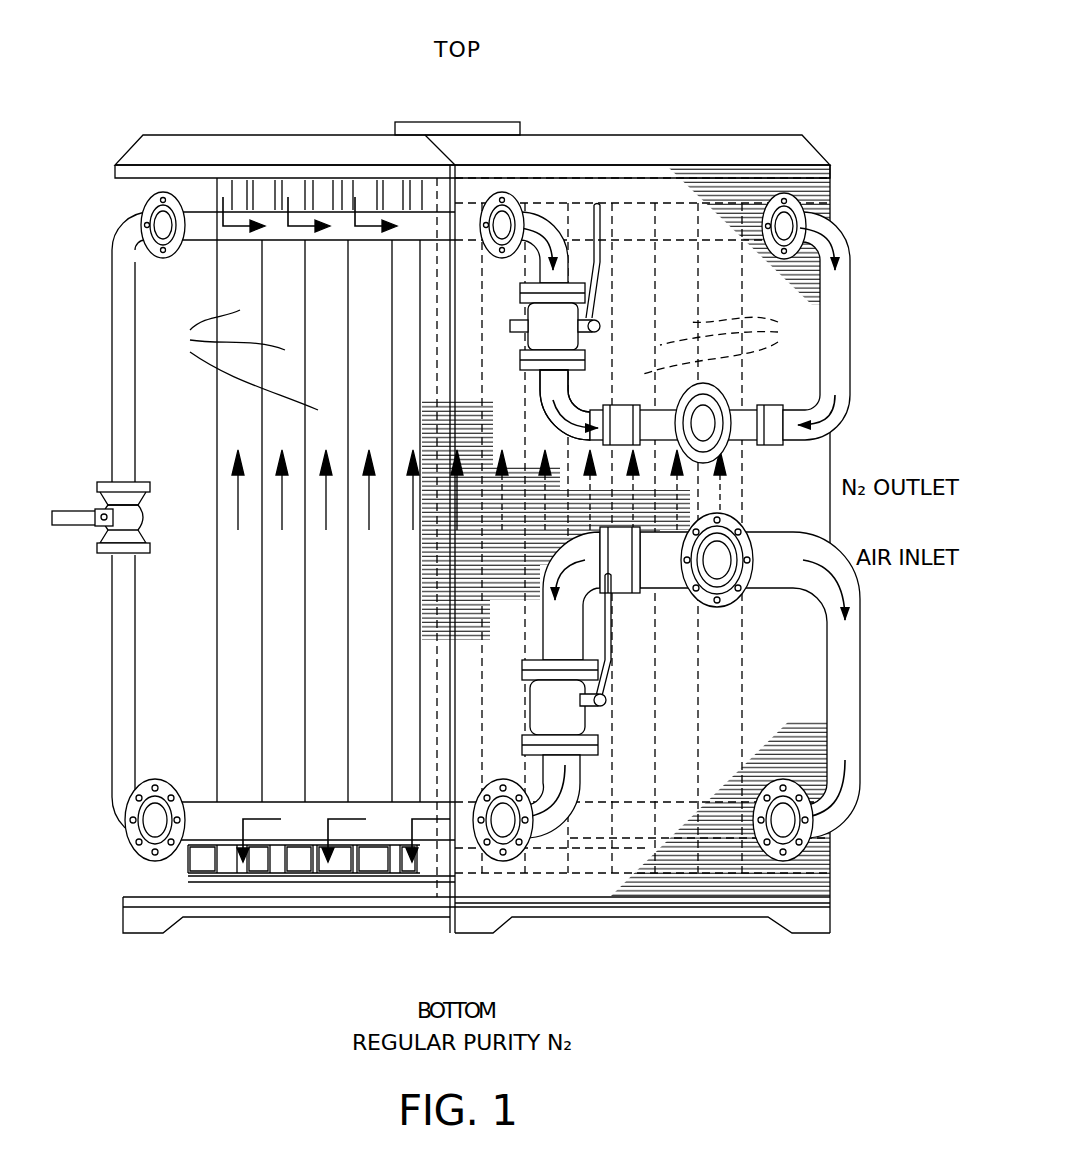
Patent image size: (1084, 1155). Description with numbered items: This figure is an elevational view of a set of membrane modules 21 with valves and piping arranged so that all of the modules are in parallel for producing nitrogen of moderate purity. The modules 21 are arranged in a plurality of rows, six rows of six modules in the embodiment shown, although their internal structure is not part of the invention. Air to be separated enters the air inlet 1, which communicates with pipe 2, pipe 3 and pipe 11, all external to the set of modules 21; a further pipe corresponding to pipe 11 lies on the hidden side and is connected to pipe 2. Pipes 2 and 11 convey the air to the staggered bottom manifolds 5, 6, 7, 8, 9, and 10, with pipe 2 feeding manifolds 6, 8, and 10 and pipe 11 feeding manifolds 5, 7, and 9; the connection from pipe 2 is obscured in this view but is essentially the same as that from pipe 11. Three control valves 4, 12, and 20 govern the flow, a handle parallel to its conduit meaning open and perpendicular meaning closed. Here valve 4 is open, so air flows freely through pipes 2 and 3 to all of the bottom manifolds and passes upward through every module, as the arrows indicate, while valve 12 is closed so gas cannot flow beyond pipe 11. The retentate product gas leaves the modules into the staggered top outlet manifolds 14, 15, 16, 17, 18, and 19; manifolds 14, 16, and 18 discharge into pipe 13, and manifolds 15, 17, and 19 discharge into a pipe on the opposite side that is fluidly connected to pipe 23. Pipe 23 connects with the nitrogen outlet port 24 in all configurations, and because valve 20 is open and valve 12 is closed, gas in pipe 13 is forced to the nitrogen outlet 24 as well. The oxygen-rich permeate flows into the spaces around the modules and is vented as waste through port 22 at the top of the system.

The air inlet 1 is at (725, 553).
The pipe 2 is at (848, 683).
The pipe 3 is at (563, 645).
The control valve 4 is at (618, 700).
The manifold 5 is at (412, 862).
The manifold 6 is at (375, 862).
The manifold 7 is at (342, 862).
The manifold 8 is at (290, 862).
The manifold 9 is at (258, 862).
The manifold 10 is at (207, 862).
The pipe 11 is at (123, 650).
The control valve 12 is at (92, 500).
The pipe 13 is at (156, 152).
The outlet manifold 14 is at (197, 222).
The outlet manifold 15 is at (258, 188).
The outlet manifold 16 is at (290, 190).
The outlet manifold 17 is at (325, 190).
The outlet manifold 18 is at (362, 190).
The outlet manifold 19 is at (390, 190).
The control valve 20 is at (605, 315).
The membrane modules 21 is at (481, 360).
The vent port 22 is at (503, 122).
The pipe 23 is at (845, 297).
The nitrogen outlet port 24 is at (720, 425).